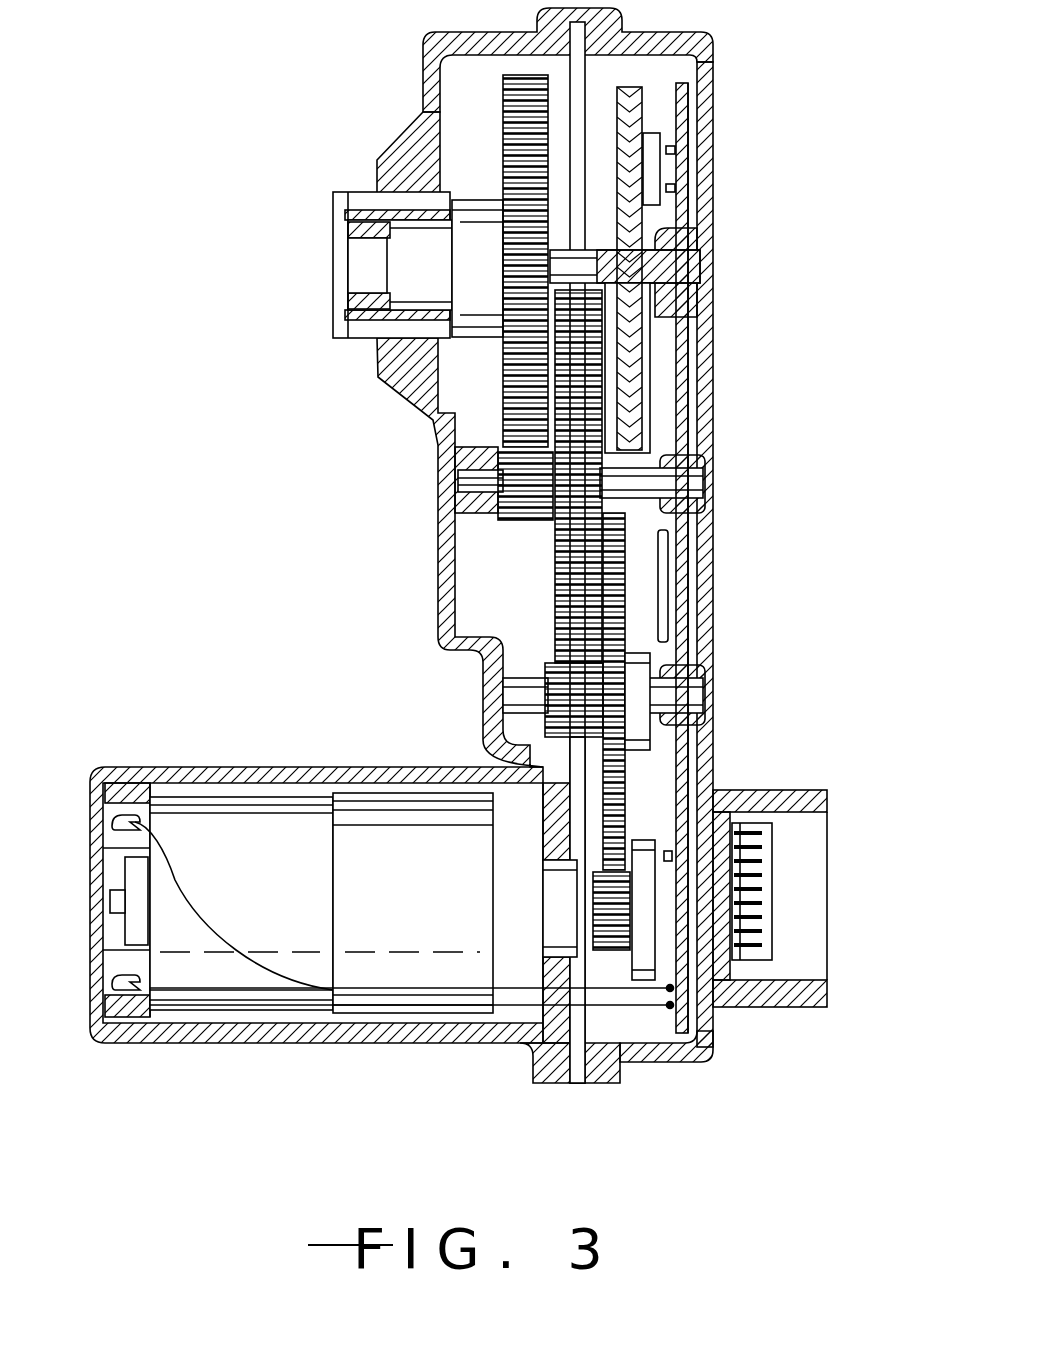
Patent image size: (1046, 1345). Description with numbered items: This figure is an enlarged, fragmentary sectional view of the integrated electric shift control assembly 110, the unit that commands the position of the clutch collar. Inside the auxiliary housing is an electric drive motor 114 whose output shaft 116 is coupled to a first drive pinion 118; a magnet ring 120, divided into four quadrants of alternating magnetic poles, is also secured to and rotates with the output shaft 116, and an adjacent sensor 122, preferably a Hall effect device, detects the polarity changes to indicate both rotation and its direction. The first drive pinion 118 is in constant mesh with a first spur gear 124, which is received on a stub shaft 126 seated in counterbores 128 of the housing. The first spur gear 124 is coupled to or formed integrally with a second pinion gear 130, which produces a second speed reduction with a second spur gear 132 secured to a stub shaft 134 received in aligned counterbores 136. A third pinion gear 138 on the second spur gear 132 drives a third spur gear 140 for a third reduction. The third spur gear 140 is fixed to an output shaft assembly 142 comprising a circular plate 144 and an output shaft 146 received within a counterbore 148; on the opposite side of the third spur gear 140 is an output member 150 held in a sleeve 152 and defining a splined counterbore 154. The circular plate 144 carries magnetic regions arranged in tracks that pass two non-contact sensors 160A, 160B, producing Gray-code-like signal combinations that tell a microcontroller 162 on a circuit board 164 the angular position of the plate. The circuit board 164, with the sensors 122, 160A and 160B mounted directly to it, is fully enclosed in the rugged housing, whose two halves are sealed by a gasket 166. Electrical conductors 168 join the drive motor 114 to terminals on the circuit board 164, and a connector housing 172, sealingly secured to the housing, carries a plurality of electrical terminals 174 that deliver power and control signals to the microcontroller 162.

The integrated electric shift control assembly 110 is at (312, 112).
The electric drive motor 114 is at (275, 882).
The output shaft 116 is at (587, 913).
The first drive pinion 118 is at (607, 888).
The magnet ring 120 is at (705, 1003).
The sensor 122 is at (668, 850).
The first spur gear 124 is at (620, 788).
The stub shaft 126 is at (683, 692).
The counterbores 128 is at (510, 692).
The second pinion gear 130 is at (570, 708).
The second spur gear 132 is at (555, 570).
The stub shaft 134 is at (697, 482).
The counterbores 136 is at (473, 487).
The third pinion gear 138 is at (522, 505).
The third spur gear 140 is at (502, 100).
The output shaft assembly 142 is at (470, 581).
The circular plate 144 is at (635, 363).
The output shaft 146 is at (683, 270).
The counterbore 148 is at (712, 244).
The output member 150 is at (378, 328).
The sleeve 152 is at (368, 212).
The splined counterbore 154 is at (365, 258).
The non-contact sensor 160A is at (672, 150).
The non-contact sensor 160B is at (672, 188).
The microcontroller 162 is at (670, 553).
The circuit board 164 is at (687, 578).
The gasket 166 is at (548, 1082).
The electrical conductors 168 is at (258, 1035).
The connector housing 172 is at (828, 808).
The electrical terminals 174 is at (772, 875).